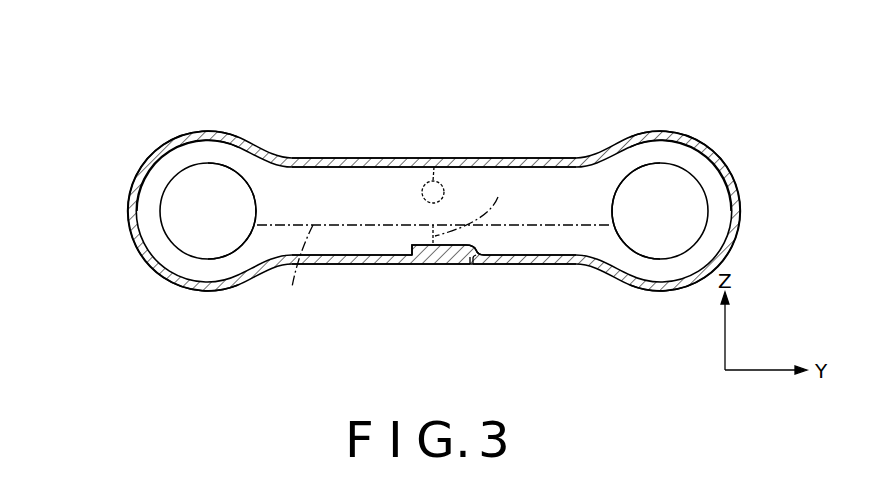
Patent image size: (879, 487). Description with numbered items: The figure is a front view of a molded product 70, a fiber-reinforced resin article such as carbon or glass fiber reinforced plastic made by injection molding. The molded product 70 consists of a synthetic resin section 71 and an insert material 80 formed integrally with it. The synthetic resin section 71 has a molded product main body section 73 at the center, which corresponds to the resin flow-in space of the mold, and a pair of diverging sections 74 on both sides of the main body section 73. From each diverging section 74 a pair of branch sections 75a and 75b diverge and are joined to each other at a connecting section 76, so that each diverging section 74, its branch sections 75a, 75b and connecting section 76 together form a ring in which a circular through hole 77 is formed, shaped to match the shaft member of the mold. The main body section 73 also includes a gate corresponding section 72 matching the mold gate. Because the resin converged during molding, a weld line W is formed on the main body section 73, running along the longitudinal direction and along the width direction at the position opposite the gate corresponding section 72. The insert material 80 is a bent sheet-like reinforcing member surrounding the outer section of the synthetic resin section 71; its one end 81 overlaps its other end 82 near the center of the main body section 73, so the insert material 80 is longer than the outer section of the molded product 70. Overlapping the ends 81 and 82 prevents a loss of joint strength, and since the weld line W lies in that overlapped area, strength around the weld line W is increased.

The molded product 70 is at (576, 95).
The synthetic resin section 71 is at (388, 190).
The gate corresponding section 72 is at (435, 157).
The molded product main body section 73 is at (333, 238).
The diverging section 74 is at (262, 215).
The branch section 75a is at (208, 155).
The branch section 75b is at (202, 268).
The connecting section 76 is at (153, 202).
The through hole 77 is at (187, 230).
The insert material 80 is at (547, 263).
The one end 81 is at (432, 246).
The other end 82 is at (447, 262).
The weld line W is at (399, 250).